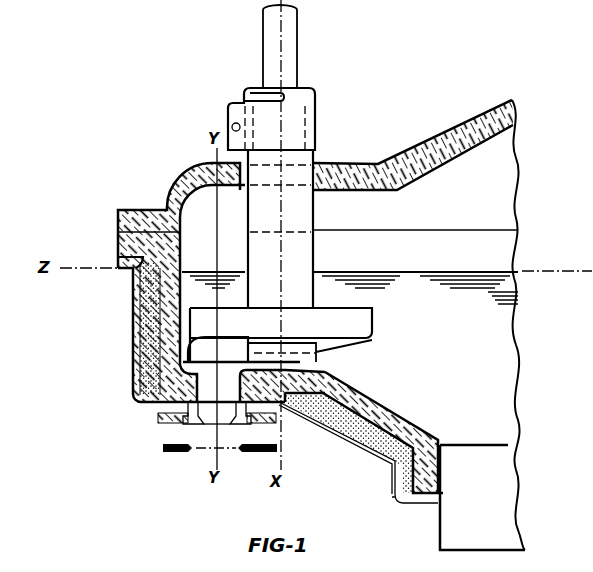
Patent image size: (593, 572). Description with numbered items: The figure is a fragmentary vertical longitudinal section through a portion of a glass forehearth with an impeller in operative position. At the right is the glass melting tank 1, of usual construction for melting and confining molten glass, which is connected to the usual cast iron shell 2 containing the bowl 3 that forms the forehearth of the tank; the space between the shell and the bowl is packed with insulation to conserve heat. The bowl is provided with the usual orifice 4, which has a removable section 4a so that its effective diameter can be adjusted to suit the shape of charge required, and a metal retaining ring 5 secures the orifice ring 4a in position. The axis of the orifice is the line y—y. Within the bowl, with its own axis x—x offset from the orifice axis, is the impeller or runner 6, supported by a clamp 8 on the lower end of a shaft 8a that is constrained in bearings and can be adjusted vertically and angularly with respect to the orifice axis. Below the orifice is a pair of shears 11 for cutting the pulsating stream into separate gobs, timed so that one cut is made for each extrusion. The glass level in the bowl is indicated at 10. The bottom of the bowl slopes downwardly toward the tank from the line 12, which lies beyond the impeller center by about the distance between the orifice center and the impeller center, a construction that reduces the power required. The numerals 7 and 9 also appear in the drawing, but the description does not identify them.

The glass melting tank 1 is at (440, 536).
The cast iron shell 2 is at (388, 457).
The bowl 3 is at (356, 441).
The orifice 4 is at (196, 392).
The removable section 4a is at (200, 425).
The metal retaining ring 5 is at (157, 418).
The impeller 6 is at (313, 248).
The valve housing 7 is at (183, 183).
The clamp 8 is at (316, 101).
The shaft 8a is at (297, 52).
The pin hole 9 is at (231, 126).
The glass level 10 is at (453, 272).
The shears 11 is at (178, 457).
The line 12 is at (325, 367).